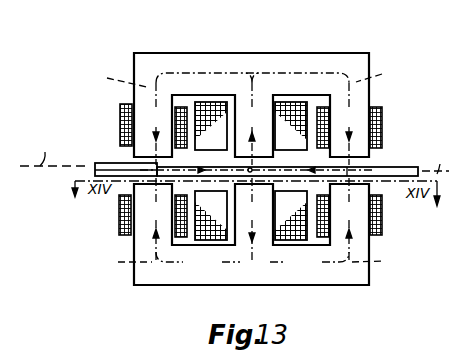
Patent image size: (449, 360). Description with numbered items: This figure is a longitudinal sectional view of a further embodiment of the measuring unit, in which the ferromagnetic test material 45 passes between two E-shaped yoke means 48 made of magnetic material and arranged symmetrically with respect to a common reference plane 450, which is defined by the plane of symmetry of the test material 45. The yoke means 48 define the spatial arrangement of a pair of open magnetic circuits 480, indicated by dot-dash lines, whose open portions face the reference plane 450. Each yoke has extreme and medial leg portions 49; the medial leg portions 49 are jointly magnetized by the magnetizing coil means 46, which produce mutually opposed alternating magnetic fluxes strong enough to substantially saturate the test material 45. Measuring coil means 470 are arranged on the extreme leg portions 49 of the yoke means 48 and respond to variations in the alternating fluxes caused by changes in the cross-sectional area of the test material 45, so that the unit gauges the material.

The test material 45 is at (393, 166).
The magnetizing coil means 46 is at (207, 102).
The yoke means 48 is at (247, 55).
The leg portions 49 is at (253, 172).
The common reference plane 450 is at (230, 155).
The measuring coil means 470 is at (121, 108).
The open magnetic circuits 480 is at (245, 165).